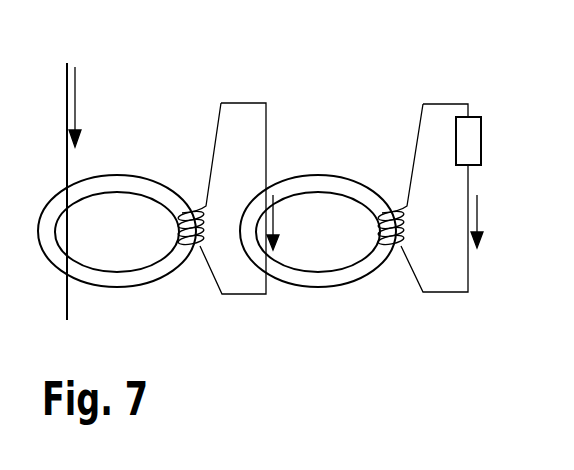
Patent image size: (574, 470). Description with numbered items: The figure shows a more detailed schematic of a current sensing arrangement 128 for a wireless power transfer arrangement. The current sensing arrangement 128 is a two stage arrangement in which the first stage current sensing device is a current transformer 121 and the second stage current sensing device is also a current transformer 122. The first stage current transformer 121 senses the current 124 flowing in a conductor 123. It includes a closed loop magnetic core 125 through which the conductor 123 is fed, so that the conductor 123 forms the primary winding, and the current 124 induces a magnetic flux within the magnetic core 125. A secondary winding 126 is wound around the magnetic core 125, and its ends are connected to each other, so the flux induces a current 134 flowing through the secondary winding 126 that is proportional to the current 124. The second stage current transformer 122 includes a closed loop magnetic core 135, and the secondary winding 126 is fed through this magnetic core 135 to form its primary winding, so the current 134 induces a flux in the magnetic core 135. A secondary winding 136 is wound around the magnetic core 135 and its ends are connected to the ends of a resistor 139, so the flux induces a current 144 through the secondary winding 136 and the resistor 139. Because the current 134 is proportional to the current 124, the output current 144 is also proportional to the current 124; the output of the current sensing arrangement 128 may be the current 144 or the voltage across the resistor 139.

The first stage current transformer 121 is at (157, 128).
The second stage current transformer 122 is at (350, 128).
The conductor 123 is at (65, 130).
The current 124 is at (77, 73).
The closed loop magnetic core 125 is at (127, 282).
The secondary winding 126 is at (196, 247).
The current sensing arrangement 128 is at (383, 62).
The output current 134 is at (277, 227).
The closed loop magnetic core 135 is at (330, 282).
The secondary winding 136 is at (396, 247).
The resistor 139 is at (478, 117).
The current 144 is at (478, 224).